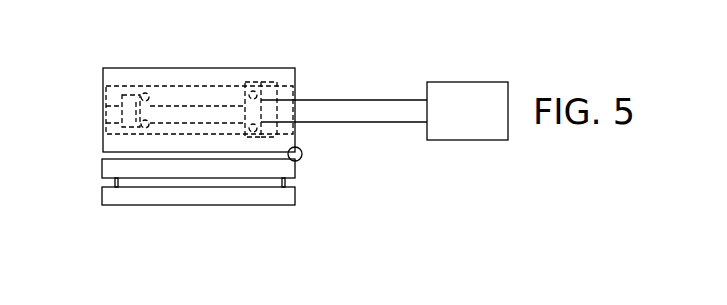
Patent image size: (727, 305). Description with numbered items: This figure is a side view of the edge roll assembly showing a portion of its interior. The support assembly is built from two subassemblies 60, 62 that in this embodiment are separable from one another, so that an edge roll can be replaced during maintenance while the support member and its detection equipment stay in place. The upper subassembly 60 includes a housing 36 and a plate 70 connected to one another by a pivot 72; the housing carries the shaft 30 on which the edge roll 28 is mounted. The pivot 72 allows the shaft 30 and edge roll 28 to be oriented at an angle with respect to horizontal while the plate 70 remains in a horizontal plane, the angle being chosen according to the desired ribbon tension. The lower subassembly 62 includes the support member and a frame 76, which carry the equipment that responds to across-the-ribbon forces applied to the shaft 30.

The edge roll 28 is at (463, 140).
The shaft 30 is at (329, 100).
The housing 36 is at (160, 68).
The subassembly 60 is at (163, 140).
The subassembly 62 is at (87, 178).
The plate 70 is at (194, 202).
The pivot 72 is at (302, 155).
The frame 76 is at (188, 200).